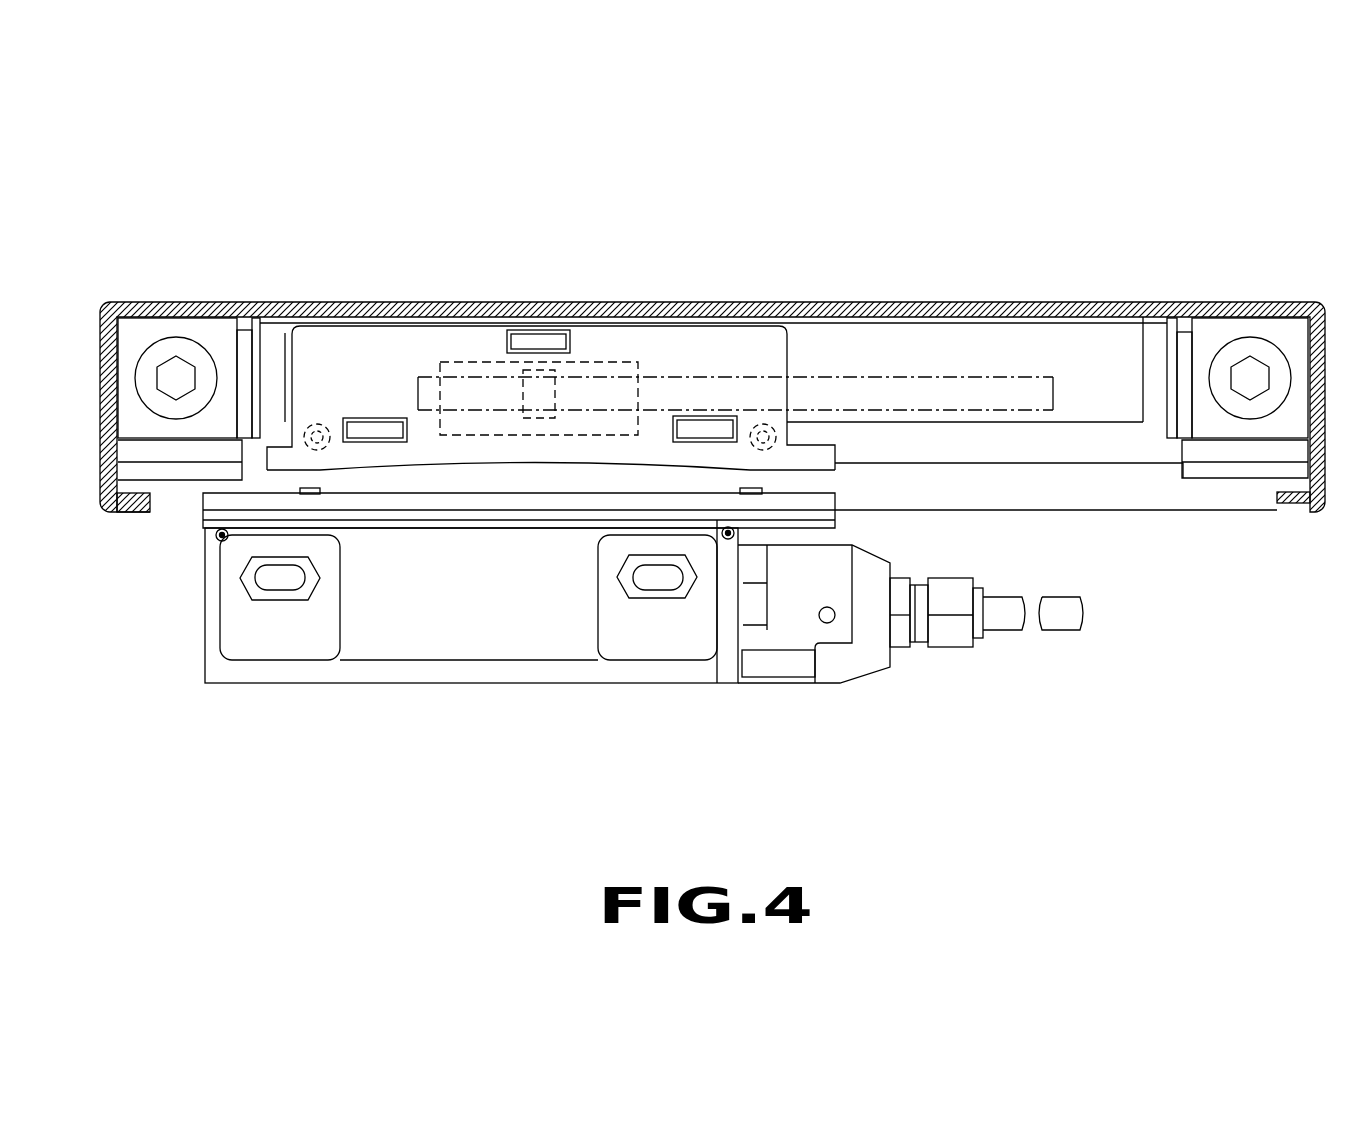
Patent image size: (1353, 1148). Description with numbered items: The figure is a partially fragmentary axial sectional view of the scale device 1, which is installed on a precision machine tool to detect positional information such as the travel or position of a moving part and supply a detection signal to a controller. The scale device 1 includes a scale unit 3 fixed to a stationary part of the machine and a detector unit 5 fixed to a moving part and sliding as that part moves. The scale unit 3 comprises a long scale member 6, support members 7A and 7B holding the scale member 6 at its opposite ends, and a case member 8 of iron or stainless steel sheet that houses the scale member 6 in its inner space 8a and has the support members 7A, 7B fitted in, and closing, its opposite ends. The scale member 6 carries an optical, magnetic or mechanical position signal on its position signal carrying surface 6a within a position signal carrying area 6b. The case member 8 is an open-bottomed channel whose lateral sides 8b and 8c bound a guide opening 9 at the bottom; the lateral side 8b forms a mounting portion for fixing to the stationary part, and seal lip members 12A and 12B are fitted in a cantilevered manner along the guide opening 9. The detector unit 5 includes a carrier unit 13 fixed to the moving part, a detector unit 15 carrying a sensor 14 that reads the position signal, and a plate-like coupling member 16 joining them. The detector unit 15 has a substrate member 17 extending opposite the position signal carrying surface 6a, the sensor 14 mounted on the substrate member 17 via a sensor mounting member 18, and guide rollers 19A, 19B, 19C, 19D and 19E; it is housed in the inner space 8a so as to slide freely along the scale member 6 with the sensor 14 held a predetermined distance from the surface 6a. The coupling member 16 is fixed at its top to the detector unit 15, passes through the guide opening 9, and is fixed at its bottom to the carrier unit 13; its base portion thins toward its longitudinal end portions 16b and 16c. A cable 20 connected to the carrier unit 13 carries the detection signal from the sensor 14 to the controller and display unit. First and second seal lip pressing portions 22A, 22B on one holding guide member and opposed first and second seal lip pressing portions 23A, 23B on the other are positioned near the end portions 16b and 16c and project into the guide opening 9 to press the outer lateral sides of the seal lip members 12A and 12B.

The scale device 1 is at (723, 105).
The scale unit 3 is at (851, 331).
The detector unit 5 is at (178, 555).
The scale member 6 is at (953, 333).
The position signal carrying surface 6a is at (1090, 350).
The position signal carrying area 6b is at (1025, 375).
The support member 7A is at (163, 330).
The support member 7B is at (1240, 325).
The case member 8 is at (905, 323).
The inner space 8a is at (1099, 440).
The lateral side 8b is at (1147, 450).
The lateral side 8c is at (736, 552).
The guide opening 9 is at (1277, 505).
The seal lip member 12A is at (1115, 488).
The seal lip member 12B is at (745, 585).
The carrier unit 13 is at (532, 698).
The sensor 14 is at (557, 400).
The detector unit 15 is at (303, 326).
The coupling member 16 is at (475, 478).
The end portion 16b is at (322, 474).
The end portion 16c is at (743, 478).
The substrate member 17 is at (430, 340).
The sensor mounting member 18 is at (647, 372).
The guide roller 19A is at (346, 418).
The guide roller 19B is at (527, 330).
The guide roller 19C is at (700, 416).
The guide roller 19D is at (310, 425).
The guide roller 19E is at (762, 435).
The cable 20 is at (998, 620).
The first seal lip pressing portion 22A is at (318, 478).
The second seal lip pressing portion 22B is at (750, 478).
The first seal lip pressing portion 23A is at (273, 668).
The second seal lip pressing portion 23B is at (751, 667).